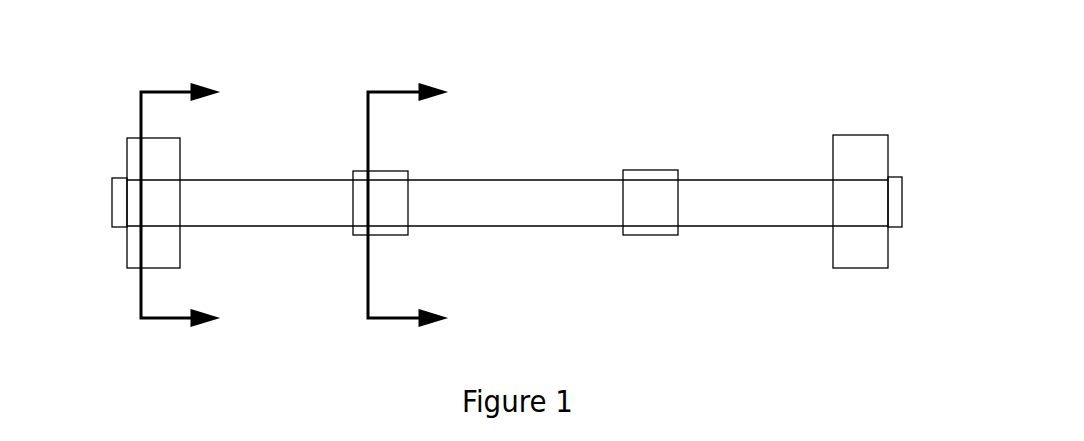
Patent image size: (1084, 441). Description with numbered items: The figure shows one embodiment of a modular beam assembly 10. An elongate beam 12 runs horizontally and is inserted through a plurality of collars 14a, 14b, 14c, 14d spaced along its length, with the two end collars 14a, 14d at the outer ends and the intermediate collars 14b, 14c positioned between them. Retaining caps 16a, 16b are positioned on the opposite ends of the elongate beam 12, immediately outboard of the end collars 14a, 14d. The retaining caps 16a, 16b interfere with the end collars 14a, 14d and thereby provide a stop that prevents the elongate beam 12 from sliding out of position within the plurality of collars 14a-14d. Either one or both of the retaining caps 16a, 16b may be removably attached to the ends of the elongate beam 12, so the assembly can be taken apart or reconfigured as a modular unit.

The modular beam assembly 10 is at (557, 70).
The elongate beam 12 is at (289, 206).
The collar 14a is at (174, 254).
The collar 14b is at (402, 208).
The collar 14c is at (669, 208).
The collar 14d is at (875, 258).
The retaining cap 16a is at (112, 187).
The retaining cap 16b is at (902, 200).